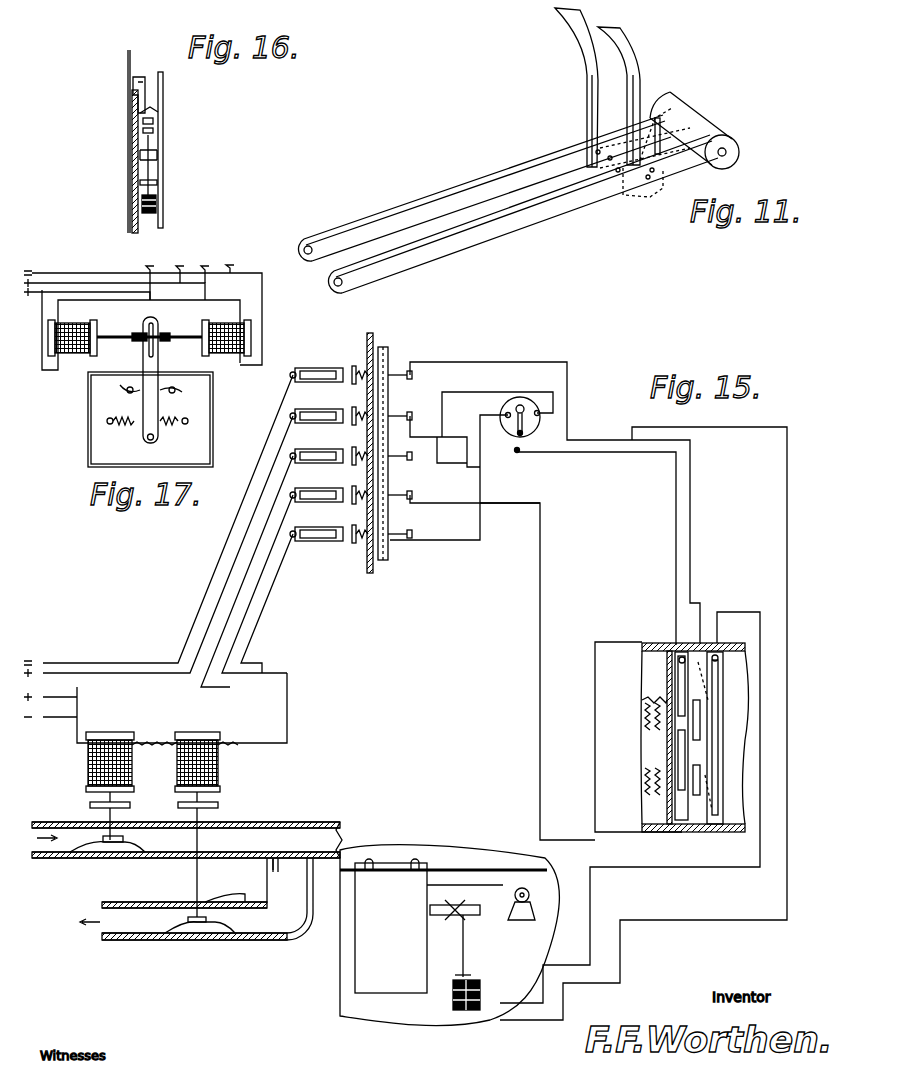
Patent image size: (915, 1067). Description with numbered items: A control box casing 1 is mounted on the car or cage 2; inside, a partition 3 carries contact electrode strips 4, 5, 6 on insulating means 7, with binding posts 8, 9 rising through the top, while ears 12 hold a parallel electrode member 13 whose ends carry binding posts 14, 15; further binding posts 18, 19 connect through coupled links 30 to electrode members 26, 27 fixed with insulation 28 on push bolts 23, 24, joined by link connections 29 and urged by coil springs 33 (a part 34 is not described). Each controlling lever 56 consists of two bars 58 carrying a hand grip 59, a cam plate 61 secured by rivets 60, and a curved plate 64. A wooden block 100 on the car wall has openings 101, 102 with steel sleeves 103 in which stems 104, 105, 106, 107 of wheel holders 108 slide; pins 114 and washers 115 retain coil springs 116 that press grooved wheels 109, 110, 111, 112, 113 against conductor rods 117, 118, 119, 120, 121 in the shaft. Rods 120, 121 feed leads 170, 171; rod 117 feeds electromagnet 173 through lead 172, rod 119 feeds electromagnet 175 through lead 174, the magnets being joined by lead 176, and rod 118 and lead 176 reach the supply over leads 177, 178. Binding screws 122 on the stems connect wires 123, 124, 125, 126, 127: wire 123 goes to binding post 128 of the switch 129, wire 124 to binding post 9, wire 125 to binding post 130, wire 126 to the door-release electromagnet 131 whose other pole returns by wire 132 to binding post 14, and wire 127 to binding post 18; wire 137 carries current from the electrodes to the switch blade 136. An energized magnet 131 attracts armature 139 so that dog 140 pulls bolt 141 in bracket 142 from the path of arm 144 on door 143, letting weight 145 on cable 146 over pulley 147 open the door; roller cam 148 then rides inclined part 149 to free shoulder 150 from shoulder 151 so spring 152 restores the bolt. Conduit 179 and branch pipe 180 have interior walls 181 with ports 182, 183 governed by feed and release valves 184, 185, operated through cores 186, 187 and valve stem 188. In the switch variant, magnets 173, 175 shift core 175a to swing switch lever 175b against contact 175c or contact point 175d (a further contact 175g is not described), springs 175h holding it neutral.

In FIG. 15, the casing 1 is at (595, 800).
In FIG. 15, the car or cage 2 is at (368, 570).
In FIG. 15, the partition 3 is at (645, 648).
In FIG. 15, the contact electrode strip 4 is at (682, 654).
In FIG. 15, the contact electrode strip 5 is at (667, 738).
In FIG. 15, the contact electrode strip 6 is at (668, 823).
In FIG. 15, the insulating means 7 is at (665, 668).
In FIG. 15, the binding post 8 is at (678, 656).
In FIG. 15, the binding post 9 is at (686, 832).
In FIG. 15, the ears 12 is at (723, 662).
In FIG. 15, the electrode member 13 is at (720, 690).
In FIG. 15, the binding post 14 is at (735, 652).
In FIG. 15, the binding post 15 is at (735, 818).
In FIG. 15, the binding post 18 is at (716, 655).
In FIG. 15, the binding post 19 is at (700, 832).
In FIG. 15, the push bolt or rod 23 is at (643, 785).
In FIG. 15, the push bolt or rod 24 is at (643, 720).
In FIG. 15, the electrode member 26 is at (702, 712).
In FIG. 15, the electrode member 27 is at (702, 785).
In FIG. 15, the insulation 28 is at (705, 762).
In FIG. 15, the link connections 29 is at (705, 745).
In FIG. 15, the coupled links 30 is at (708, 680).
In FIG. 15, the coil springs 33 is at (665, 808).
In FIG. 15, the spring seat 34 is at (650, 700).
In FIG. 11, the controlling lever 56 is at (478, 240).
In FIG. 11, the bars 58 is at (486, 190).
In FIG. 11, the hand grip 59 is at (700, 118).
In FIG. 11, the rivets or bolts 60 is at (618, 168).
In FIG. 11, the cam plate 61 is at (590, 68).
In FIG. 11, the curved plate 64 is at (662, 120).
In FIG. 15, the wooden block 100 is at (381, 560).
In FIG. 15, the openings 101 is at (366, 362).
In FIG. 15, the openings 102 is at (400, 400).
In FIG. 15, the steel sleeves or bushings 103 is at (388, 365).
In FIG. 15, the stem 104 is at (412, 538).
In FIG. 15, the stem 105 is at (400, 490).
In FIG. 15, the stem 106 is at (400, 450).
In FIG. 15, the stem 107 is at (413, 378).
In FIG. 15, the wheel holders 108 is at (343, 454).
In FIG. 15, the grooved wheel 109 is at (320, 541).
In FIG. 15, the grooved wheel 110 is at (308, 502).
In FIG. 15, the grooved wheel 111 is at (308, 463).
In FIG. 15, the grooved wheel 112 is at (306, 423).
In FIG. 15, the grooved wheel 113 is at (308, 382).
In FIG. 15, the pins 114 is at (352, 366).
In FIG. 15, the washers 115 is at (360, 370).
In FIG. 15, the coil springs 116 is at (354, 543).
In FIG. 17, the conductor rod or wire 117 is at (246, 265).
In FIG. 15, the conductor rod or wire 117 is at (296, 541).
In FIG. 17, the conductor rod or wire 118 is at (221, 266).
In FIG. 15, the conductor rod or wire 118 is at (284, 494).
In FIG. 17, the conductor rod or wire 119 is at (188, 266).
In FIG. 15, the conductor rod or wire 119 is at (283, 455).
In FIG. 17, the conductor rod or wire 120 is at (200, 296).
In FIG. 15, the conductor rod or wire 120 is at (282, 415).
In FIG. 17, the conductor rod or wire 121 is at (158, 275).
In FIG. 15, the conductor rod or wire 121 is at (283, 378).
In FIG. 15, the binding screws 122 is at (413, 456).
In FIG. 15, the lead or wire 123 is at (508, 440).
In FIG. 15, the lead or wire 124 is at (480, 503).
In FIG. 15, the lead or wire 125 is at (540, 400).
In FIG. 15, the lead or wire 126 is at (432, 425).
In FIG. 15, the lead or wire 127 is at (490, 358).
In FIG. 15, the binding post 128 is at (510, 405).
In FIG. 15, the switch 129 is at (555, 412).
In FIG. 15, the binding post 130 is at (548, 398).
In FIG. 16, the electromagnet 131 is at (157, 201).
In FIG. 15, the electromagnet 131 is at (482, 992).
In FIG. 15, the lead or wire 132 is at (742, 612).
In FIG. 15, the switch blade 136 is at (530, 400).
In FIG. 15, the wire or lead 137 is at (560, 458).
In FIG. 16, the armature 139 is at (158, 184).
In FIG. 15, the armature 139 is at (470, 975).
In FIG. 16, the spring tensioned dog 140 is at (158, 152).
In FIG. 15, the spring tensioned dog 140 is at (470, 912).
In FIG. 16, the spring tensioned bolt 141 is at (154, 134).
In FIG. 15, the spring tensioned bolt 141 is at (452, 916).
In FIG. 16, the bracket 142 is at (155, 122).
In FIG. 16, the door 143 is at (136, 168).
In FIG. 16, the arm 144 is at (152, 110).
In FIG. 15, the arm 144 is at (455, 900).
In FIG. 15, the weight 145 is at (538, 918).
In FIG. 15, the cable 146 is at (508, 868).
In FIG. 15, the pulley 147 is at (530, 893).
In FIG. 16, the roller cam 148 is at (152, 146).
In FIG. 15, the roller cam 148 is at (445, 915).
In FIG. 15, the inclined part 149 is at (440, 910).
In FIG. 15, the shoulder 150 is at (472, 905).
In FIG. 15, the shoulder 151 is at (455, 920).
In FIG. 15, the spring 152 is at (440, 906).
In FIG. 17, the lead or wire 170 is at (92, 283).
In FIG. 15, the lead or wire 170 is at (115, 663).
In FIG. 17, the lead or wire 171 is at (60, 273).
In FIG. 15, the lead or wire 171 is at (70, 663).
In FIG. 17, the wire or lead 172 is at (262, 311).
In FIG. 15, the wire or lead 172 is at (288, 700).
In FIG. 17, the electromagnet 173 is at (251, 337).
In FIG. 15, the electromagnet 173 is at (220, 750).
In FIG. 17, the lead or wire 174 is at (42, 372).
In FIG. 15, the lead or wire 174 is at (222, 690).
In FIG. 17, the electromagnet 175 is at (78, 356).
In FIG. 15, the electromagnet 175 is at (87, 763).
In FIG. 17, the core 175a is at (176, 343).
In FIG. 17, the switch lever 175b is at (147, 366).
In FIG. 17, the contact 175c is at (130, 395).
In FIG. 17, the contact point 175d is at (213, 380).
In FIG. 17, the contact 175g is at (172, 395).
In FIG. 17, the springs 175h is at (158, 438).
In FIG. 17, the wire or lead 176 is at (262, 292).
In FIG. 15, the wire or lead 176 is at (176, 748).
In FIG. 17, the wire or lead 177 is at (125, 283).
In FIG. 15, the wire or lead 177 is at (138, 697).
In FIG. 15, the wire or lead 178 is at (150, 720).
In FIG. 15, the conduit 179 is at (275, 830).
In FIG. 15, the branch conduit or pipe 180 is at (118, 940).
In FIG. 15, the interior walls 181 is at (92, 852).
In FIG. 15, the port or opening 182 is at (125, 850).
In FIG. 15, the port or opening 183 is at (185, 925).
In FIG. 15, the feed valve 184 is at (100, 802).
In FIG. 15, the release valve 185 is at (205, 925).
In FIG. 15, the core 186 is at (215, 795).
In FIG. 15, the core 187 is at (115, 805).
In FIG. 15, the valve stem 188 is at (199, 876).